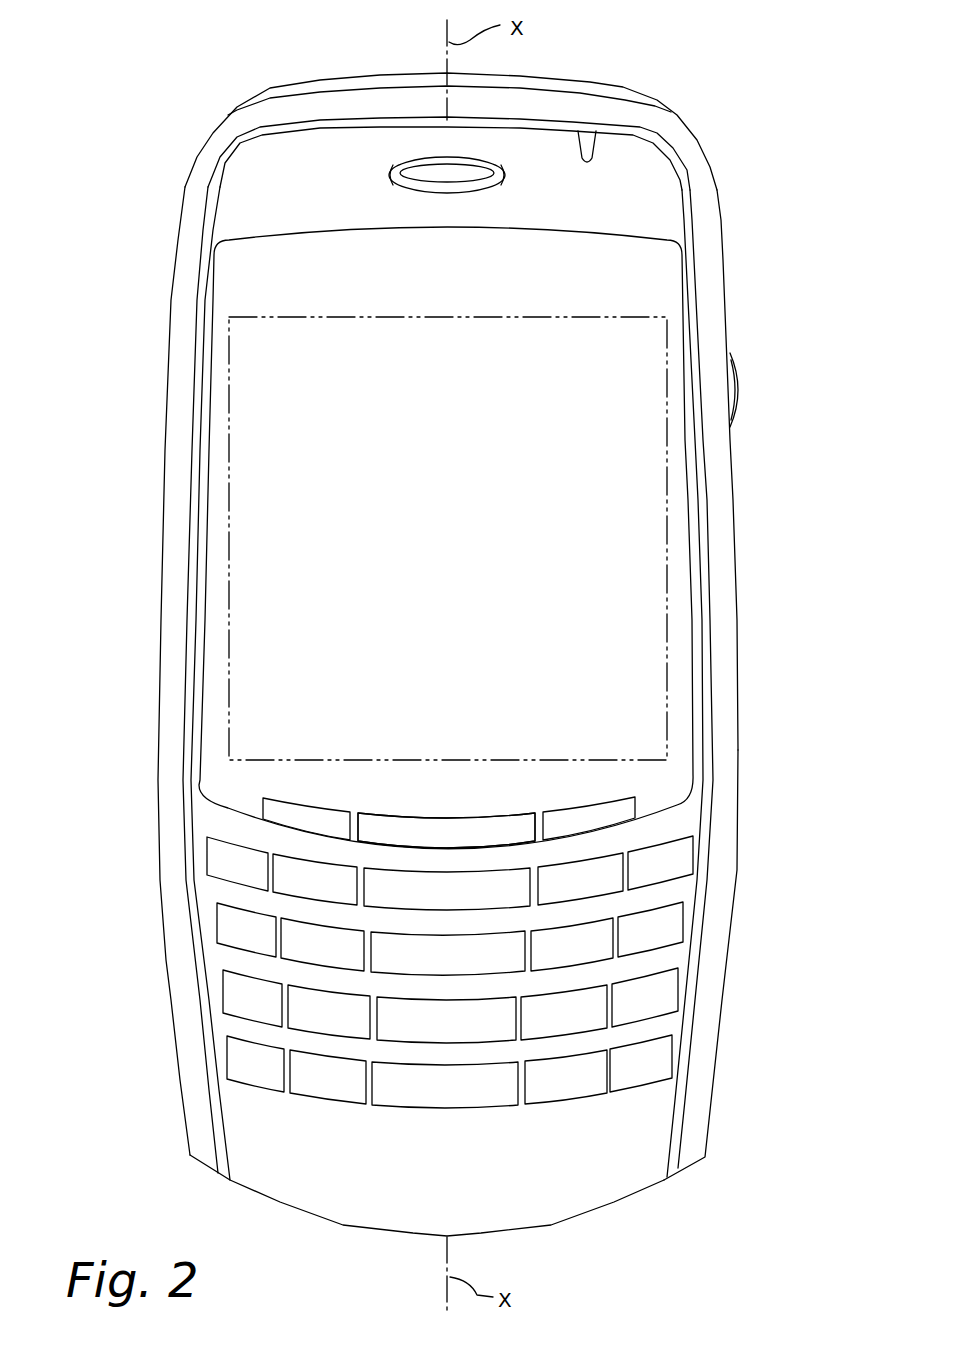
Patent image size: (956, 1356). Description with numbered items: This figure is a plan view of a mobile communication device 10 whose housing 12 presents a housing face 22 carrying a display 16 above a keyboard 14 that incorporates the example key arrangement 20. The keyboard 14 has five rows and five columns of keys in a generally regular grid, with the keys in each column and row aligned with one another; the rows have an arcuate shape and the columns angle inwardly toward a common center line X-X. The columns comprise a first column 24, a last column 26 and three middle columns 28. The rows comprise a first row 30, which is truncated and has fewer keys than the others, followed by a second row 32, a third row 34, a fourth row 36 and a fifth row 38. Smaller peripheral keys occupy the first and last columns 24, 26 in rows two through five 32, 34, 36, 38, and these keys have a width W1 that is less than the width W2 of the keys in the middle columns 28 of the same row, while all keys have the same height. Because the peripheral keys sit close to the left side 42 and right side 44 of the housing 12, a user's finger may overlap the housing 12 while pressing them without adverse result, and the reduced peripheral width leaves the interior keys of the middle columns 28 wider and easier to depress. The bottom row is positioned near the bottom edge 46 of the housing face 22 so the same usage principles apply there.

The mobile communication device 10 is at (122, 96).
The housing 12 is at (717, 295).
The keyboard 14 is at (660, 1057).
The display 16 is at (613, 558).
The key arrangement 20 is at (718, 826).
The housing face 22 is at (595, 1177).
The first column 24 is at (230, 842).
The last column 26 is at (660, 843).
The middle columns 28 is at (320, 863).
The first row 30 is at (260, 808).
The second row 32 is at (207, 857).
The third row 34 is at (217, 925).
The fourth row 36 is at (223, 998).
The fifth row 38 is at (227, 1067).
The left side 42 is at (158, 570).
The right side 44 is at (738, 690).
The bottom edge 46 is at (343, 1225).
The width of peripheral keys W1 is at (623, 937).
The width of middle column keys W2 is at (535, 950).